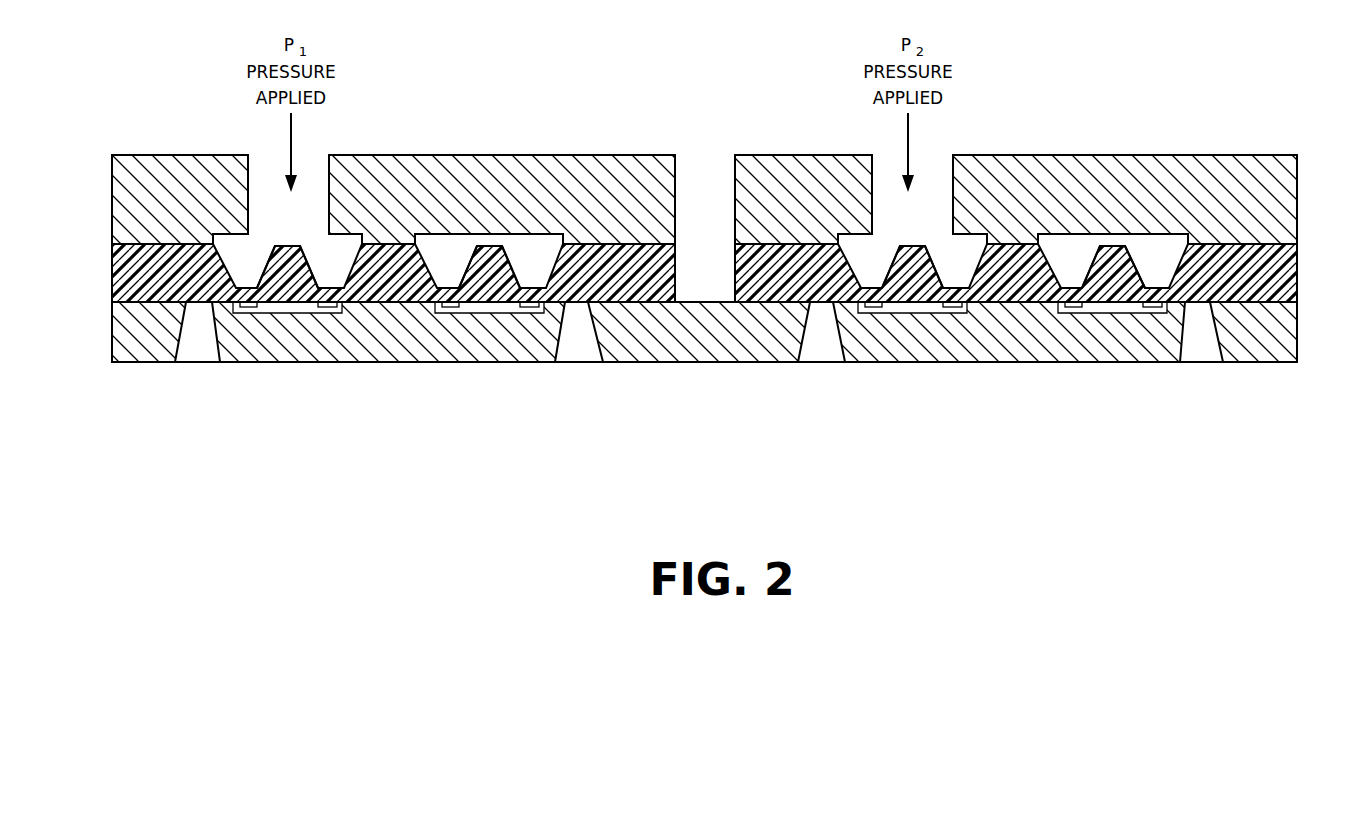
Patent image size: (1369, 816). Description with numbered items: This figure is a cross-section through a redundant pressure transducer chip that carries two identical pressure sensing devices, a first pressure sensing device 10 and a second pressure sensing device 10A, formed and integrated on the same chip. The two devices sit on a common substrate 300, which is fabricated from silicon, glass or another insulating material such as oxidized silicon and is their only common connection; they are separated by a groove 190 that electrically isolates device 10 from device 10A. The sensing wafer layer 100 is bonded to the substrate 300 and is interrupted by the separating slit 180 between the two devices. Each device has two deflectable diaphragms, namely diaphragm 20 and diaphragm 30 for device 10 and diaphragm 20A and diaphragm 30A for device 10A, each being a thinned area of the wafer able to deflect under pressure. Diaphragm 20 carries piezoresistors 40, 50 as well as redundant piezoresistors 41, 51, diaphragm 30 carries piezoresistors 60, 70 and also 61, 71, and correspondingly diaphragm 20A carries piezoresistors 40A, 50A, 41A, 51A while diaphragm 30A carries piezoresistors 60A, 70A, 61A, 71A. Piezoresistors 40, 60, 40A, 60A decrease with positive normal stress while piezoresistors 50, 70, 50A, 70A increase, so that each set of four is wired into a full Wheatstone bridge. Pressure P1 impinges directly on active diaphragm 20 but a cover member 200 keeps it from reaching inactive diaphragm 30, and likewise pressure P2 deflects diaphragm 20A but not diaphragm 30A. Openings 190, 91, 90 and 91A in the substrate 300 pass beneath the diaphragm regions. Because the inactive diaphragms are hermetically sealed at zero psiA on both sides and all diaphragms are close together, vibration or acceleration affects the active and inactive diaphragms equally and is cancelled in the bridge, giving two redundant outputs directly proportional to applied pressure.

The first pressure sensing device 10 is at (623, 172).
The second pressure sensing device 10A is at (1230, 171).
The diaphragm 20 is at (282, 287).
The diaphragm 20A is at (907, 287).
The diaphragm 30 is at (484, 287).
The diaphragm 30A is at (1107, 287).
The piezoresistor 40 is at (243, 309).
The piezoresistor 41 is at (334, 309).
The piezoresistor 40A is at (868, 309).
The piezoresistor 41A is at (959, 309).
The piezoresistor 50 is at (262, 314).
The piezoresistor 51 is at (319, 314).
The piezoresistor 50A is at (887, 314).
The piezoresistor 51A is at (944, 314).
The piezoresistor 60 is at (464, 314).
The piezoresistor 61 is at (521, 314).
The piezoresistor 60A is at (1087, 314).
The piezoresistor 61A is at (1144, 314).
The piezoresistor 70 is at (445, 309).
The piezoresistor 71 is at (536, 309).
The piezoresistor 70A is at (1068, 309).
The piezoresistor 71A is at (1159, 309).
The vent opening 90 is at (815, 362).
The vent opening 91 is at (583, 362).
The vent opening 91A is at (1203, 362).
The flexible substrate 100 is at (118, 275).
The slit 180 is at (705, 170).
The groove 190 is at (189, 362).
The cover member 200 is at (118, 200).
The substrate 300 is at (118, 338).